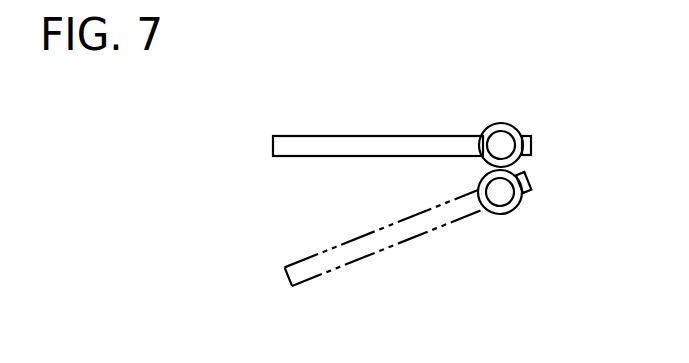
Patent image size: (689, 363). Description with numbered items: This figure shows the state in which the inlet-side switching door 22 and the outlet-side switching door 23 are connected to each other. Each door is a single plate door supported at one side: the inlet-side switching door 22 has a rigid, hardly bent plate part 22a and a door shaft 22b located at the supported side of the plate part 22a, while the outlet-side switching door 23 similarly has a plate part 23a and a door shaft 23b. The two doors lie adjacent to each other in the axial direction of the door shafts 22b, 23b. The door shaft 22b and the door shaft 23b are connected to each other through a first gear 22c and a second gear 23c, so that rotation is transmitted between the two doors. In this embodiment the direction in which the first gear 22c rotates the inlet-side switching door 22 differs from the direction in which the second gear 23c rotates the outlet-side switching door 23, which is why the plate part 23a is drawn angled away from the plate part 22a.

The inlet-side switching door 22 is at (398, 116).
The plate part 22a is at (360, 136).
The door shaft 22b is at (503, 145).
The first gear 22c is at (531, 141).
The outlet-side switching door 23 is at (398, 253).
The plate part 23a is at (372, 252).
The door shaft 23b is at (500, 193).
The second gear 23c is at (517, 207).